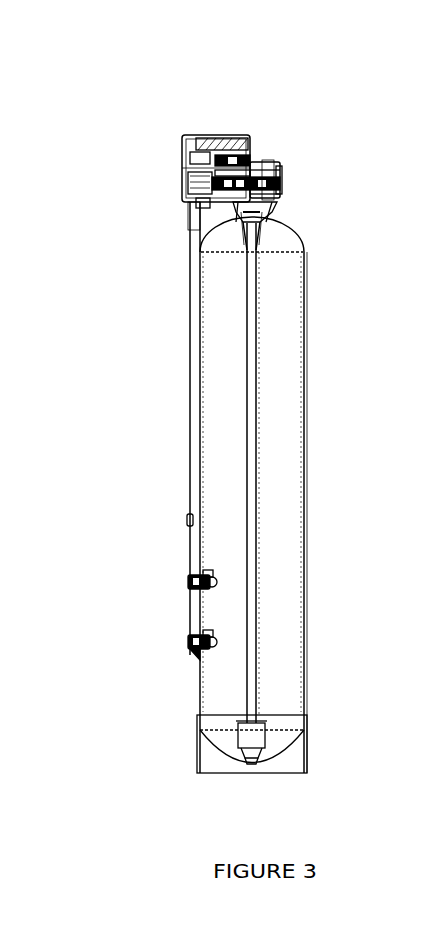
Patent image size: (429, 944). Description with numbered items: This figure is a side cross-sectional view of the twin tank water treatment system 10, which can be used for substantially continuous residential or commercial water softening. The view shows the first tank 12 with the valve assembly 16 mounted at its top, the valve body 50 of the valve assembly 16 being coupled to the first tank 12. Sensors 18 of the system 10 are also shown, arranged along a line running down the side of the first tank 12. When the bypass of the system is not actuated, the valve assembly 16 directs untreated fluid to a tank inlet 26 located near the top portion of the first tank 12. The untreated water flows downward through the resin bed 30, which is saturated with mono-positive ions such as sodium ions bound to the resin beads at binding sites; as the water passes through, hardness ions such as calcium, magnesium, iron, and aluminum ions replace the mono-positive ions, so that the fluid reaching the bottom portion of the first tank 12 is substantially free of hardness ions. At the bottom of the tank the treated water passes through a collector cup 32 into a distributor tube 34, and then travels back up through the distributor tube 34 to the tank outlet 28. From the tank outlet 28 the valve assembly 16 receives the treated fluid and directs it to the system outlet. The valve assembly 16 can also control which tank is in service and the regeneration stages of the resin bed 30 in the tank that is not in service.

The twin tank water treatment system 10 is at (319, 97).
The first tank 12 is at (305, 424).
The valve assembly 16 is at (235, 126).
The sensors 18 is at (193, 645).
The tank inlet 26 is at (243, 230).
The tank outlet 28 is at (249, 240).
The resin bed 30 is at (279, 515).
The collector cup 32 is at (248, 735).
The distributor tube 34 is at (252, 448).
The valve body 50 is at (263, 178).